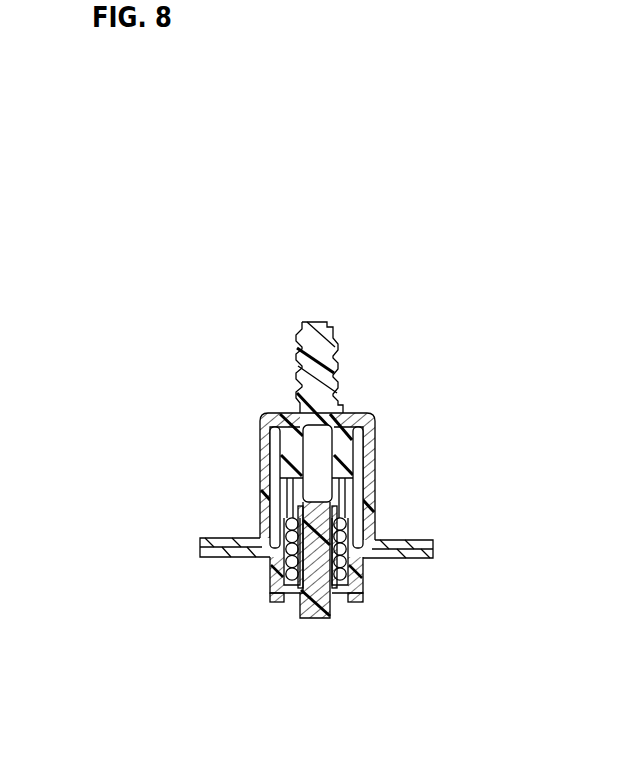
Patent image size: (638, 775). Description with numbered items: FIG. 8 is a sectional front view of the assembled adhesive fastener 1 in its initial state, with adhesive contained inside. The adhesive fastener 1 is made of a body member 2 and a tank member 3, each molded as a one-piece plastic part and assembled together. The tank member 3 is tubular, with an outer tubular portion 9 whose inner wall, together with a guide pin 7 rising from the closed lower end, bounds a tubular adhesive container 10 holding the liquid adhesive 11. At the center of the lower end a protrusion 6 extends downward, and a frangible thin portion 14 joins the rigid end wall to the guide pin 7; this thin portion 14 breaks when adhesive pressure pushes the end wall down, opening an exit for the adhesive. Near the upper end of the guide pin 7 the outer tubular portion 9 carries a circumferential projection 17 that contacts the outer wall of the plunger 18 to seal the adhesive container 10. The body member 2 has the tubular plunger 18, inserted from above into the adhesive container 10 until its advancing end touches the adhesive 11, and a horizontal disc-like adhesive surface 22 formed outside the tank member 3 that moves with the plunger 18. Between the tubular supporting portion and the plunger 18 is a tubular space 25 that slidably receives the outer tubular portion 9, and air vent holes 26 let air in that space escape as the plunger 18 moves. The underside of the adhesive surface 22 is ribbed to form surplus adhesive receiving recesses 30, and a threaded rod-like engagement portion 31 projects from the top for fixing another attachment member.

The adhesive fastener 1 is at (148, 450).
The body member 2 is at (242, 506).
The tank member 3 is at (255, 584).
The protrusion 6 is at (308, 598).
The guide pin 7 is at (362, 600).
The outer tubular portion 9 is at (360, 578).
The adhesive container 10 is at (372, 536).
The liquid adhesive 11 is at (360, 525).
The frangible thin portion 14 is at (337, 597).
The circumferential projection 17 is at (373, 497).
The plunger 18 is at (363, 447).
The adhesive surface 22 is at (430, 542).
The tubular space 25 is at (377, 496).
The air vent hole 26 is at (363, 437).
The surplus adhesive receiving recess 30 is at (410, 557).
The rod-like engagement portion 31 is at (333, 341).